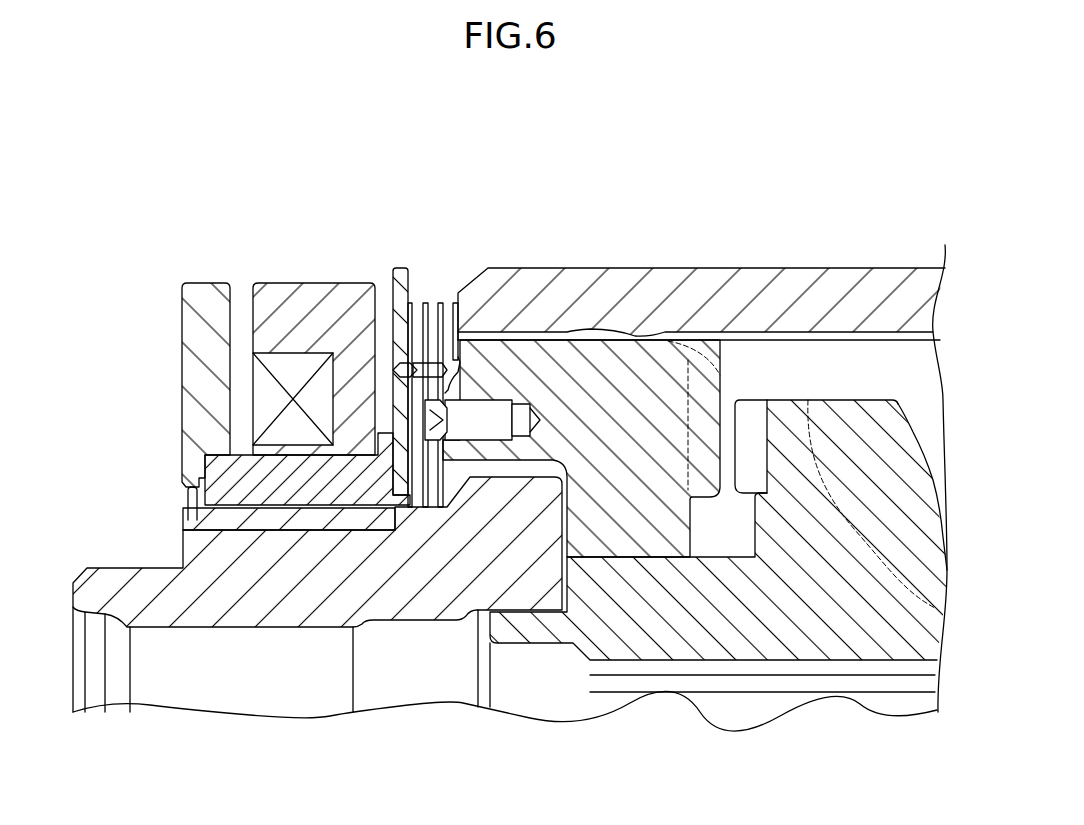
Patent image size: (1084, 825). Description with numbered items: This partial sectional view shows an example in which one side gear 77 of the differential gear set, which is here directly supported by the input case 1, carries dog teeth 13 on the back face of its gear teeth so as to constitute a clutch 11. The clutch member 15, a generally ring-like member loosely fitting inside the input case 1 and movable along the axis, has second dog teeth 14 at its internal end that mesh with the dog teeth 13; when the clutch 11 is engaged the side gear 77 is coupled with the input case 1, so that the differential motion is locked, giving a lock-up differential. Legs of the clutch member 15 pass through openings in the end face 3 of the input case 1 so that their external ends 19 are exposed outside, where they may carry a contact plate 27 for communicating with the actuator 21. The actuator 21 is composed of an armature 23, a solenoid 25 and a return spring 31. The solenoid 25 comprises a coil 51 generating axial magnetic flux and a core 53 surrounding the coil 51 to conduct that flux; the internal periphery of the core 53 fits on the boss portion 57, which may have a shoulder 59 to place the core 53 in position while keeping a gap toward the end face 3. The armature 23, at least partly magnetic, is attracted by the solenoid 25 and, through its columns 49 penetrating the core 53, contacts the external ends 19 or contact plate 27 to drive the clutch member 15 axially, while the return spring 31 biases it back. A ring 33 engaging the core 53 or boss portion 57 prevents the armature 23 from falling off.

The input case 1 is at (701, 255).
The end face 3 is at (455, 302).
The clutch 11 is at (730, 256).
The dog teeth 13 is at (760, 400).
The second dog teeth 14 is at (663, 330).
The clutch member 15 is at (627, 558).
The external ends 19 is at (477, 338).
The actuator 21 is at (265, 332).
The armature 23 is at (177, 363).
The solenoid 25 is at (299, 310).
The contact plate 27 is at (407, 267).
The return spring 31 is at (433, 302).
The ring 33 is at (183, 504).
The columns 49 is at (245, 455).
The coil 51 is at (260, 383).
The core 53 is at (307, 313).
The boss portion 57 is at (196, 630).
The shoulder 59 is at (375, 514).
The side gear 77 is at (900, 400).